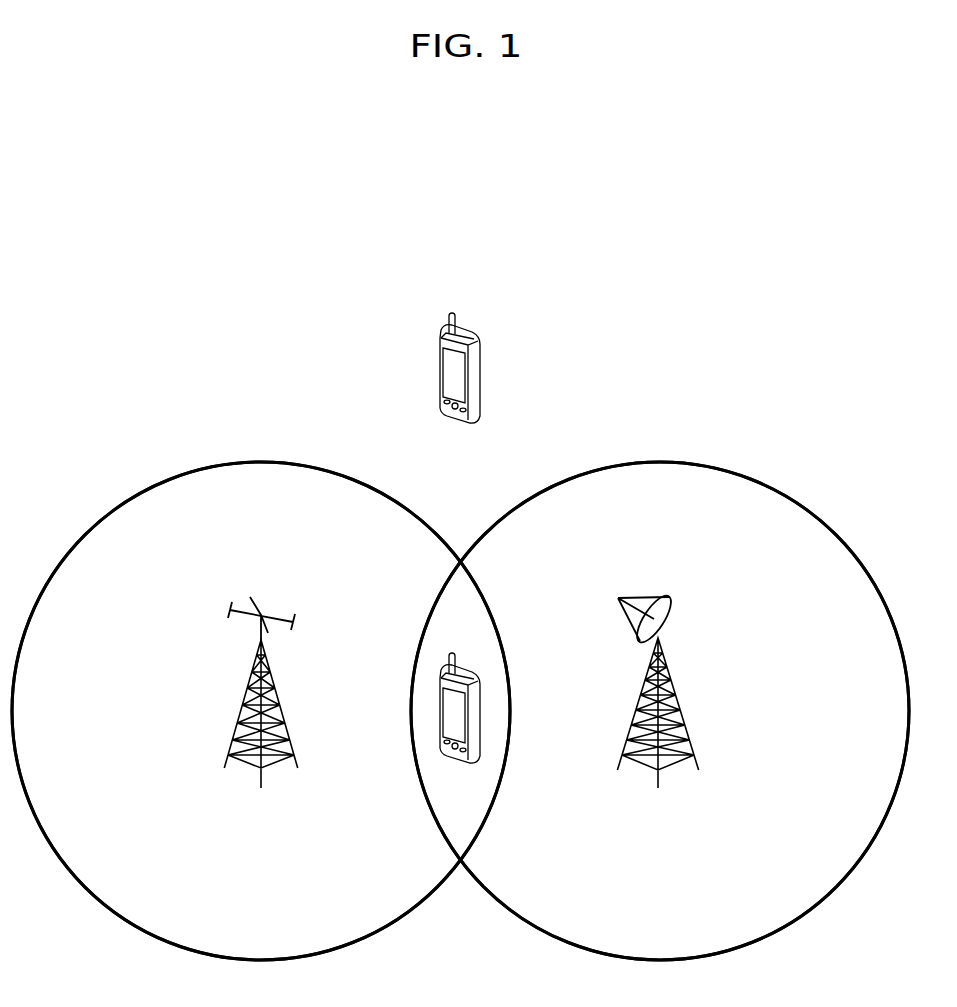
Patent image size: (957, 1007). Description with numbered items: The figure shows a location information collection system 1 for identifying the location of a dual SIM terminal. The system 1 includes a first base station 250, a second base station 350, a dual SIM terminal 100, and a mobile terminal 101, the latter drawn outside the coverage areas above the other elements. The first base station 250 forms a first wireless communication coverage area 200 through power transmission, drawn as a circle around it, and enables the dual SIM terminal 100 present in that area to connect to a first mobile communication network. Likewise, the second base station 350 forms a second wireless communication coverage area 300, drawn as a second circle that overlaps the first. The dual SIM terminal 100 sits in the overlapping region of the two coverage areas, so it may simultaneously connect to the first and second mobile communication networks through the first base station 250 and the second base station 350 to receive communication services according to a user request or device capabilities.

The location information collection system 1 is at (664, 264).
The dual SIM terminal 100 is at (470, 671).
The mobile terminal 101 is at (468, 331).
The first wireless communication coverage area 200 is at (263, 462).
The first base station 250 is at (272, 610).
The second wireless communication coverage area 300 is at (661, 462).
The second base station 350 is at (661, 597).